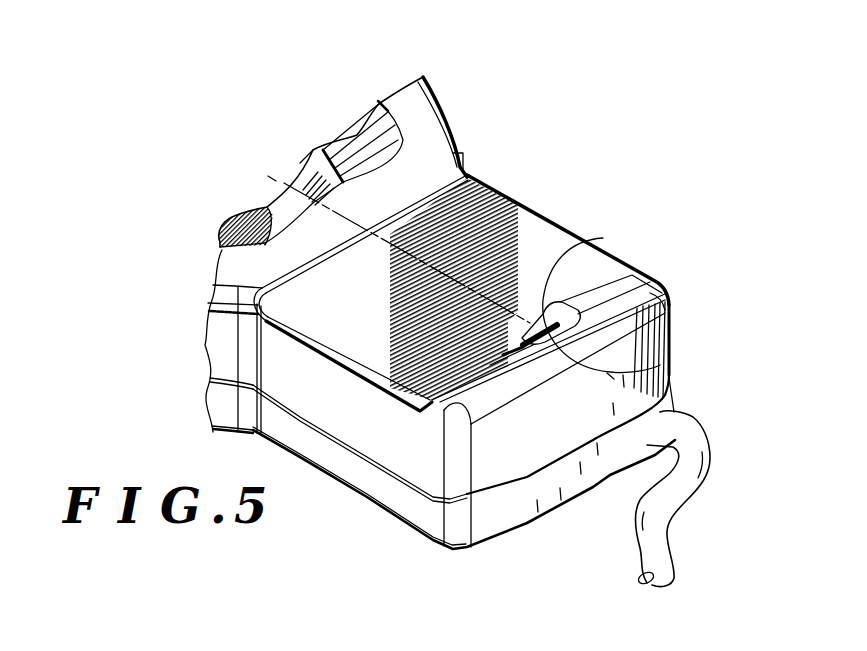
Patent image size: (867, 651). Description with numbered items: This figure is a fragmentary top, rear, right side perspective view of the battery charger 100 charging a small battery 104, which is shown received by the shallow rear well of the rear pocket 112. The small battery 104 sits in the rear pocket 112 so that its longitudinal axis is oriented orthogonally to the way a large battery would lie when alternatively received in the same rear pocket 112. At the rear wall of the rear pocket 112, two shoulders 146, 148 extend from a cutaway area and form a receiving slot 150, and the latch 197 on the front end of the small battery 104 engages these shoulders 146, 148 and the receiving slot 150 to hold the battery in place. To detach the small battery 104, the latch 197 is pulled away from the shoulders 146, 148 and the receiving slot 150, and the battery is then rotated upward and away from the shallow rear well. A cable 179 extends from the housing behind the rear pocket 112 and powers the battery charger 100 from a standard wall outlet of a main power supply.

The battery charger 100 is at (463, 94).
The small battery 104 is at (544, 245).
The rear pocket 112 is at (672, 252).
The shoulder 146 is at (553, 328).
The shoulder 148 is at (528, 330).
The receiving slot 150 is at (627, 373).
The cable 179 is at (653, 523).
The latch 197 is at (601, 295).